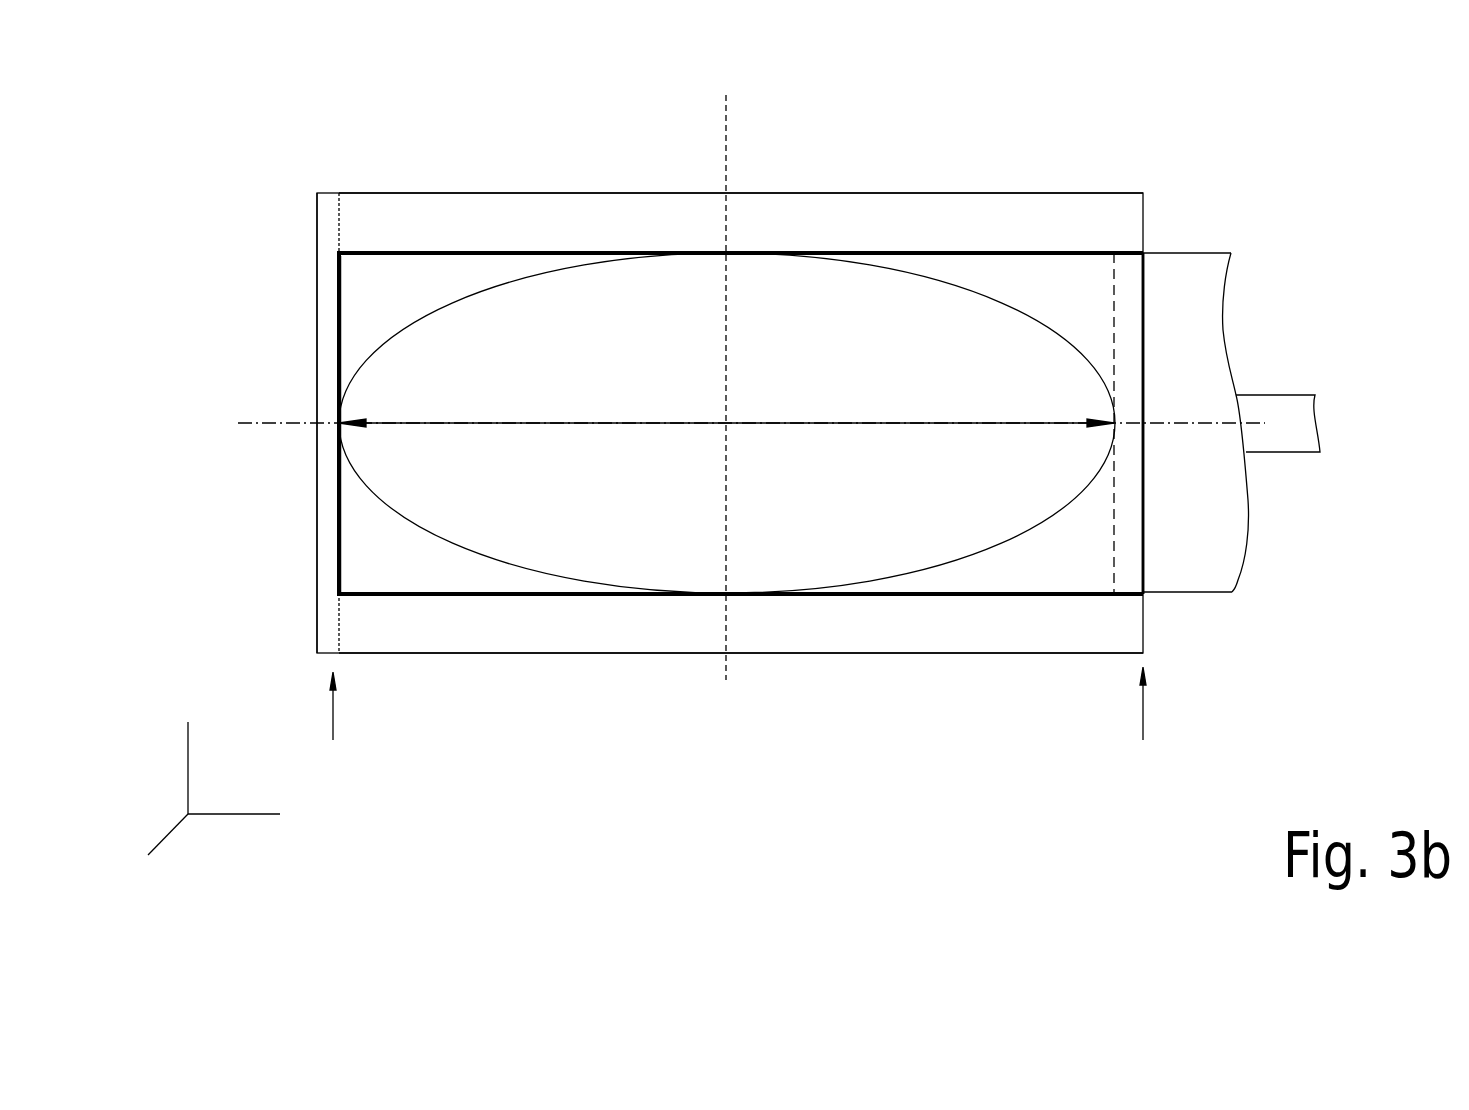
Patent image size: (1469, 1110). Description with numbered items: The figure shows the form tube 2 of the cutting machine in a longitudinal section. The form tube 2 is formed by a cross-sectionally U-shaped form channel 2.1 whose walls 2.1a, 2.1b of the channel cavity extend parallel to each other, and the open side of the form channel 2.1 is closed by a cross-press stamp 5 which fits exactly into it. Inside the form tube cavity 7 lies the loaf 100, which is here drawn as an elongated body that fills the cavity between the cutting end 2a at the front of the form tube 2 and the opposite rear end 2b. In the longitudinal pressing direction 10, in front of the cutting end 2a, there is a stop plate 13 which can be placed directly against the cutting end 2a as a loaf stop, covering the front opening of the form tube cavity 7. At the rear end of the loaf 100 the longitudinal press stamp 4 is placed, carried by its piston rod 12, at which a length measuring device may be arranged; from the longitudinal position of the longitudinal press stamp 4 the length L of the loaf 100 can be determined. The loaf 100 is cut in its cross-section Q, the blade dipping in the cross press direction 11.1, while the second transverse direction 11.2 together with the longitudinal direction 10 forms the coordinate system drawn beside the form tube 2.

The form tube 2 is at (368, 130).
The form channel 2.1 is at (741, 423).
The wall of the form channel 2.1a is at (741, 632).
The wall of the form channel 2.1b is at (973, 225).
The cutting end 2a is at (341, 729).
The second end of the sensor element 2b is at (1153, 722).
The longitudinal press stamp 4 is at (1185, 593).
The cross-press stamp 5 is at (1132, 505).
The form tube cavity 7 is at (363, 424).
The longitudinal pressing direction 10 is at (196, 805).
The cross press direction 11.1 is at (154, 851).
The second axis 11.2 is at (186, 781).
The piston rod 12 is at (1278, 423).
The stop plate 13 is at (323, 573).
The loaf 100 is at (883, 267).
The length of the loaf L is at (726, 427).
The cross-section of the loaf Q is at (1112, 557).